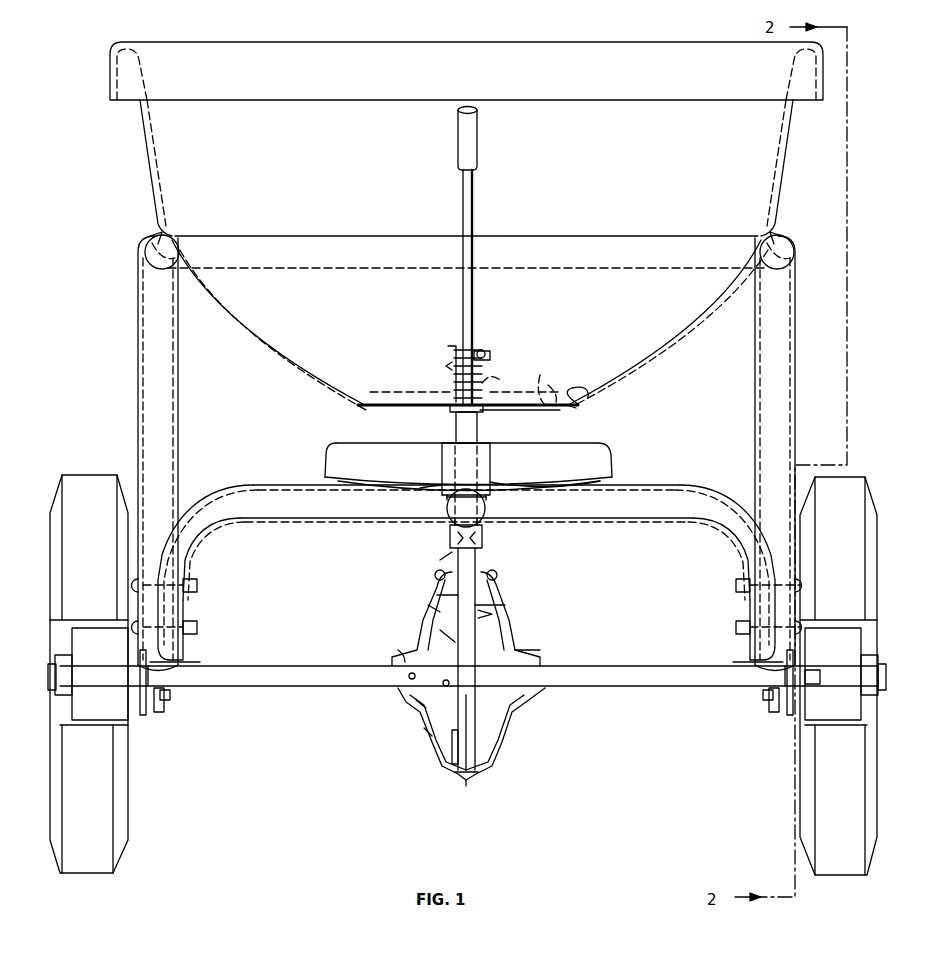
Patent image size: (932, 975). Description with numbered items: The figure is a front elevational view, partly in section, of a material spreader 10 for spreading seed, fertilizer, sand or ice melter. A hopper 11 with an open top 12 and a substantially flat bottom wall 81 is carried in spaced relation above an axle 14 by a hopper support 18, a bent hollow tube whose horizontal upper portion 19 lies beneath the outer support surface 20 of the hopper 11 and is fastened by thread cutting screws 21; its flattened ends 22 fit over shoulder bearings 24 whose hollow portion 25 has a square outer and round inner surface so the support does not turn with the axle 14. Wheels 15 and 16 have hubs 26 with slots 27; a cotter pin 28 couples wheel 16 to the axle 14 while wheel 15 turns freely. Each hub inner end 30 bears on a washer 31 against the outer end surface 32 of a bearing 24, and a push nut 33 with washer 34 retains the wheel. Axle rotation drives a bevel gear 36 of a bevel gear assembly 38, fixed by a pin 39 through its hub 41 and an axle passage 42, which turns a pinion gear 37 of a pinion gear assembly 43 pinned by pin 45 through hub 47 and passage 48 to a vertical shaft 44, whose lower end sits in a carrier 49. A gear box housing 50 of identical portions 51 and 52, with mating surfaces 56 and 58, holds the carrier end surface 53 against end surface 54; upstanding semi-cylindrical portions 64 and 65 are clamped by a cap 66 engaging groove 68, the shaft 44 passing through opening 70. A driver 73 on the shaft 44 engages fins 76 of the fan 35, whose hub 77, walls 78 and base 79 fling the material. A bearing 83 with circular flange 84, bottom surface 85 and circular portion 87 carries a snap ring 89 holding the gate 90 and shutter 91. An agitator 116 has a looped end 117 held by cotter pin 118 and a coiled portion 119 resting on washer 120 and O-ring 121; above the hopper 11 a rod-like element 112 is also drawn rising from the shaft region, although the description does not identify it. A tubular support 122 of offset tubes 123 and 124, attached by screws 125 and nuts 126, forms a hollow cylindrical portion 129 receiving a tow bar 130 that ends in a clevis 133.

The material spreader 10 is at (121, 336).
The hopper 11 is at (790, 178).
The open top 12 is at (280, 42).
The axle 14 is at (680, 665).
The wheel 15 is at (98, 475).
The wheel 16 is at (858, 477).
The hopper support 18 is at (797, 356).
The upper portion 19 is at (786, 238).
The outer support surface 20 is at (793, 250).
The thread cutting screws 21 is at (760, 228).
The ends 22 is at (162, 712).
The shoulder bearing 24 is at (171, 695).
The hollow portion 25 is at (200, 664).
The hub 26 is at (125, 650).
The slots 27 is at (96, 700).
The cotter pin 28 is at (806, 680).
The inner end 30 is at (166, 662).
The washer 31 is at (118, 615).
The outer end surface 32 is at (136, 712).
The push nut 33 is at (50, 680).
The washer 34 is at (62, 705).
The fan 35 is at (606, 456).
The bevel gear 36 is at (459, 745).
The pinion gear 37 is at (475, 632).
The bevel gear assembly 38 is at (452, 722).
The pin 39 is at (404, 690).
The hub 41 is at (415, 701).
The passage 42 is at (398, 652).
The pinion gear assembly 43 is at (490, 613).
The vertical shaft 44 is at (478, 565).
The pin 45 is at (506, 605).
The hub 47 is at (430, 605).
The passage 48 is at (440, 595).
The carrier 49 is at (522, 651).
The gear box housing 50 is at (508, 749).
The portion 51 is at (426, 730).
The portion 52 is at (510, 712).
The end surface 53 is at (452, 677).
The end surface 54 is at (440, 632).
The mating surface 56 is at (478, 769).
The mating surface 58 is at (460, 773).
The upstanding hollow semi-cylindrical portion 64 is at (437, 580).
The upstanding hollow semi-cylindrical portion 65 is at (494, 579).
The cap 66 is at (483, 548).
The groove 68 is at (452, 568).
The opening 70 is at (483, 535).
The driver 73 is at (440, 500).
The fins 76 is at (420, 487).
The hub 77 is at (443, 457).
The walls 78 is at (382, 446).
The base 79 is at (548, 478).
The bottom wall 81 is at (549, 385).
The bearing 83 is at (440, 409).
The upper circular flange 84 is at (486, 383).
The bottom surface 85 is at (486, 409).
The circular shaped portion 87 is at (480, 425).
The snap ring 89 is at (452, 420).
The gate 90 is at (590, 397).
The shutter 91 is at (574, 406).
The control rod 112 is at (474, 192).
The agitator 116 is at (449, 360).
The end 117 is at (484, 350).
The cotter pin 118 is at (490, 357).
The coiled portion 119 is at (541, 374).
The washer 120 is at (455, 378).
The O-ring 121 is at (455, 392).
The tubular support 122 is at (645, 520).
The offset tube 123 is at (689, 487).
The offset tube 124 is at (322, 520).
The screws 125 is at (800, 588).
The nuts 126 is at (735, 595).
The hollow cylindrical portion 129 is at (487, 508).
The tow bar 130 is at (450, 520).
The clevis 133 is at (491, 463).